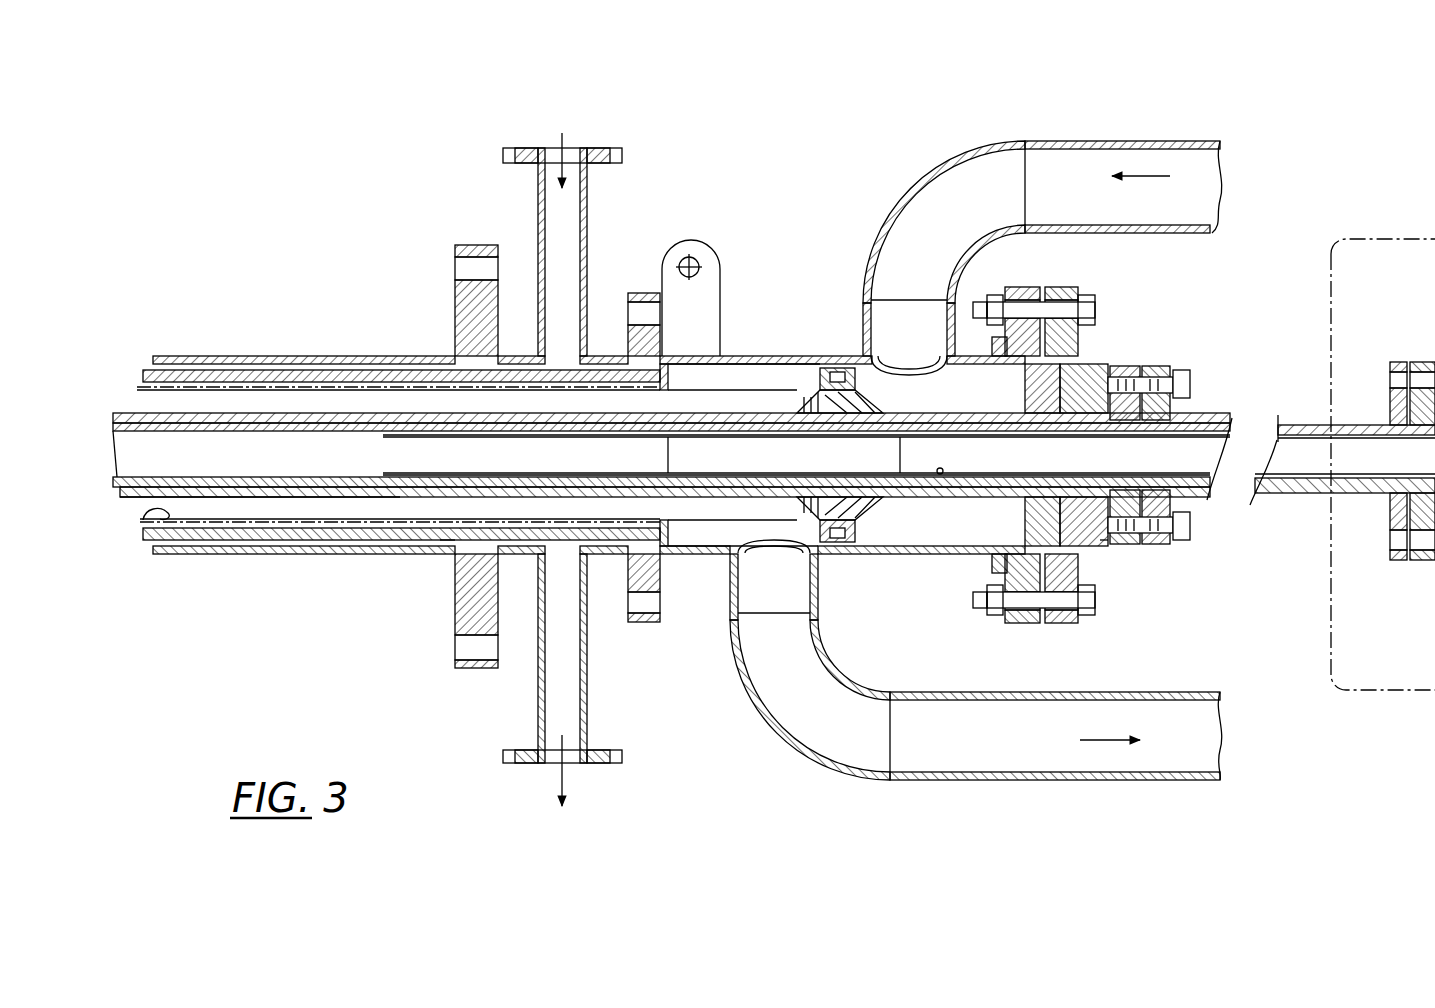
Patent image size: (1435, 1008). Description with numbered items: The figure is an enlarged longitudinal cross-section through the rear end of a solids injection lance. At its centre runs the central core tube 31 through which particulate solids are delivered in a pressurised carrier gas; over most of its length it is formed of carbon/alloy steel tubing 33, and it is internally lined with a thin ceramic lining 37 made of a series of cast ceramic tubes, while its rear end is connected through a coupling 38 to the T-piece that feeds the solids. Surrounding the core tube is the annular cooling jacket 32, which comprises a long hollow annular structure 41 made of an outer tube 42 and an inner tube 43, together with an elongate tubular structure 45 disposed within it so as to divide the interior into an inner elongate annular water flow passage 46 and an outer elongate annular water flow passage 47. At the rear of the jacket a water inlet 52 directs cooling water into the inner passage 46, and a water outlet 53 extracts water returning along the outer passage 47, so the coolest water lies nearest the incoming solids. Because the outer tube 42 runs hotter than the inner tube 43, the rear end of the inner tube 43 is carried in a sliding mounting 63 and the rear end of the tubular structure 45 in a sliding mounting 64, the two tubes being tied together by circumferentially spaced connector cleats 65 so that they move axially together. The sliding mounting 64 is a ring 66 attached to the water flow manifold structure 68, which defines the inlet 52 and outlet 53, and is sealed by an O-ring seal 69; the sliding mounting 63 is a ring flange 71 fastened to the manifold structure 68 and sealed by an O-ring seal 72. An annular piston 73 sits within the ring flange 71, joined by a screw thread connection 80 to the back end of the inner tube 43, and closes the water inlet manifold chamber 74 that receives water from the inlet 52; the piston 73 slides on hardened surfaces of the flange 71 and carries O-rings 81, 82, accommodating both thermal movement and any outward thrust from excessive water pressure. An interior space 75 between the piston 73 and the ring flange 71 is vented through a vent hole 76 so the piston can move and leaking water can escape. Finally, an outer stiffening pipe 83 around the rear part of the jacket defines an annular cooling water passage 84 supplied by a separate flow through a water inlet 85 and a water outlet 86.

The central core tube 31 is at (235, 494).
The annular cooling jacket 32 is at (377, 354).
The carbon/alloy steel tubing 33 is at (280, 432).
The ceramic lining 37 is at (447, 437).
The coupling 38 is at (1390, 408).
The hollow annular structure 41 is at (300, 556).
The outer tube 42 is at (228, 378).
The inner tube 43 is at (210, 499).
The elongate tubular structure 45 is at (147, 510).
The inner elongate annular water flow passage 46 is at (318, 400).
The outer elongate annular water flow passage 47 is at (443, 542).
The water inlet 52 is at (943, 183).
The water outlet 53 is at (1050, 755).
The sliding mounting 63 is at (1095, 362).
The sliding mounting 64 is at (845, 366).
The connector cleats 65 is at (868, 522).
The ring 66 is at (832, 560).
The water flow manifold structure 68 is at (769, 353).
The O-ring seal 69 is at (820, 534).
The ring flange 71 is at (1053, 327).
The O-ring seal 72 is at (1100, 547).
The annular piston 73 is at (1060, 535).
The water inlet manifold chamber 74 is at (957, 527).
The interior space 75 is at (1068, 532).
The vent hole 76 is at (1095, 542).
The screw thread connection 80 is at (1182, 386).
The O-ring 81 is at (1041, 352).
The O-ring 82 is at (1087, 353).
The outer stiffening pipe 83 is at (182, 356).
The annular cooling water passage 84 is at (210, 370).
The water inlet 85 is at (562, 235).
The water outlet 86 is at (553, 698).